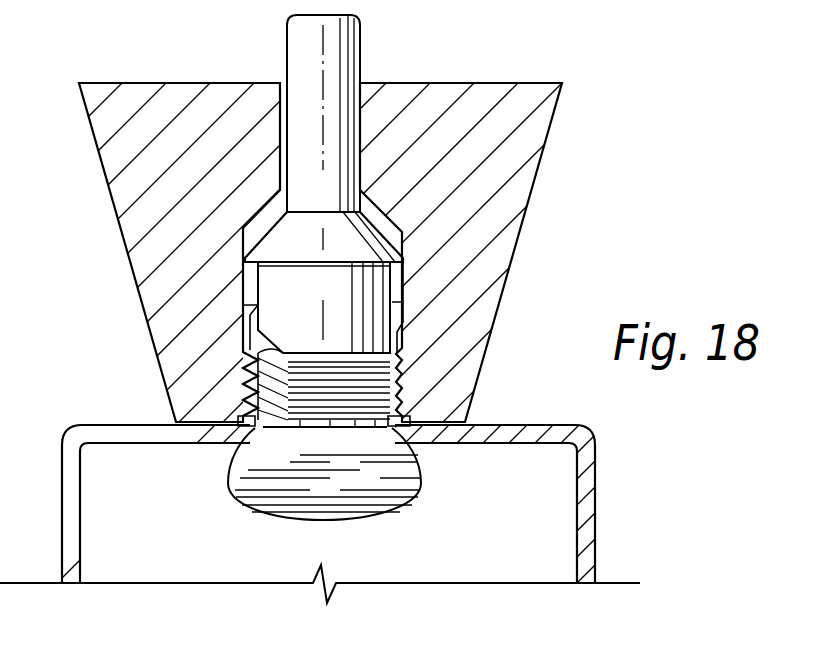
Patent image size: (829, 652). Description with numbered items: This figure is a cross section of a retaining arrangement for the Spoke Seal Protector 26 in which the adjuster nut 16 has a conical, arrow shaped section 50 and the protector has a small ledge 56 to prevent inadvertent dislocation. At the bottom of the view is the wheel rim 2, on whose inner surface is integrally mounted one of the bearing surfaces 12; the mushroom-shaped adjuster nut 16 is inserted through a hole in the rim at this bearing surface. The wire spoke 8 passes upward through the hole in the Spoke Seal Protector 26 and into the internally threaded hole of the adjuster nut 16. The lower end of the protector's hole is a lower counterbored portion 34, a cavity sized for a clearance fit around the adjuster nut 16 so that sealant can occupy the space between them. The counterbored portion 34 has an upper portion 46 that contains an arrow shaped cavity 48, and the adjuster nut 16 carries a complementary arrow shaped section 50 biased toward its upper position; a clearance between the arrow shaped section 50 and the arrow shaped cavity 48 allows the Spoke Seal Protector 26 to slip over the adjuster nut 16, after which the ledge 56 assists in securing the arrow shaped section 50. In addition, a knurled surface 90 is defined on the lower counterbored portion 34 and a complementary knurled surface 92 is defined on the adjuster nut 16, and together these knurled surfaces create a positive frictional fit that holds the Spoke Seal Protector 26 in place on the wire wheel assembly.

The wheel rim 2 is at (596, 486).
The wire spoke 8 is at (360, 53).
The bearing surfaces 12 is at (190, 420).
The adjuster nut 16 is at (250, 512).
The Spoke Seal Protector 26 is at (570, 115).
The lower counterbored portion 34 is at (407, 292).
The upper portion 46 is at (388, 213).
The arrow shaped cavity 48 is at (260, 215).
The arrow shaped section 50 is at (243, 234).
The ledge 56 is at (243, 298).
The knurled surface 90 is at (400, 384).
The knurled surface 92 is at (398, 430).